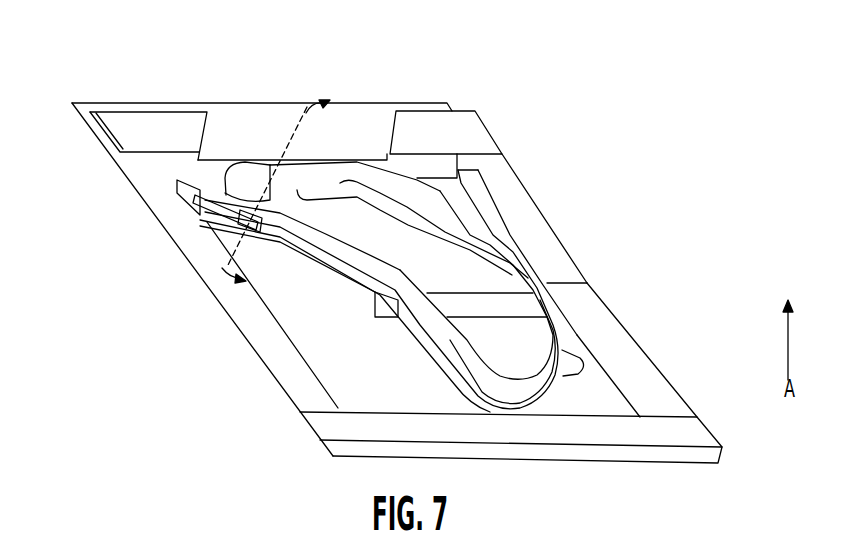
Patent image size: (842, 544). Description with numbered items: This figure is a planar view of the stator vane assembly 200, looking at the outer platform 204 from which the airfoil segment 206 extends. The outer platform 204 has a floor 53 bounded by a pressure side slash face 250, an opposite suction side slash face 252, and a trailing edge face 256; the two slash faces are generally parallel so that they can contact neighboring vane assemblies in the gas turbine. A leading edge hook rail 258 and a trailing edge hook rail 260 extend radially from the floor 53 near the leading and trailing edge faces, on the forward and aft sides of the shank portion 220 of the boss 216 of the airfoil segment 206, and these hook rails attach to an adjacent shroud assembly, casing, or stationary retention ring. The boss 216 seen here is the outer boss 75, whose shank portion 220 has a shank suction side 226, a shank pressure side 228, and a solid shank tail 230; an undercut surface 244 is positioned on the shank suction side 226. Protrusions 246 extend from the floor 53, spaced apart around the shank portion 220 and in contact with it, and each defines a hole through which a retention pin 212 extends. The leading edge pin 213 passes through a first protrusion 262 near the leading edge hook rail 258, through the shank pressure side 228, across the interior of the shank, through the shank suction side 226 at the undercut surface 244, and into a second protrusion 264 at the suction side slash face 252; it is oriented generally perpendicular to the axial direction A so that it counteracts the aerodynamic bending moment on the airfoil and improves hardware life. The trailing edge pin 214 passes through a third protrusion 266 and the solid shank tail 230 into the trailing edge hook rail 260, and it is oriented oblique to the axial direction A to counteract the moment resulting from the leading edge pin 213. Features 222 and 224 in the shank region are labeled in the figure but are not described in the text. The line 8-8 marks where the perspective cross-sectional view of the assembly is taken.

The stator vane assembly 200 is at (567, 108).
The outer platform 204 is at (599, 209).
The airfoil segment 206 is at (440, 178).
The retention pin 212 is at (217, 272).
The leading edge pin 213 is at (377, 317).
The trailing edge pin 214 is at (203, 223).
The boss 216 is at (646, 351).
The outer boss 75 is at (590, 368).
The shank portion 220 is at (440, 355).
The rounded end rim 222 is at (533, 402).
The dome 224 is at (226, 160).
The shank suction side 226 is at (473, 213).
The shank pressure side 228 is at (323, 319).
The solid shank tail 230 is at (249, 176).
The undercut surface 244 is at (552, 255).
The protrusions 246 is at (403, 212).
The pressure side slash face 250 is at (277, 383).
The suction side slash face 252 is at (665, 389).
The trailing edge face 256 is at (98, 104).
The leading edge hook rail 258 is at (700, 443).
The trailing edge hook rail 260 is at (478, 138).
The first protrusion 262 is at (353, 285).
The second protrusion 264 is at (587, 295).
The third protrusion 266 is at (323, 112).
The floor 53 is at (353, 248).
The section line 8 is at (276, 206).